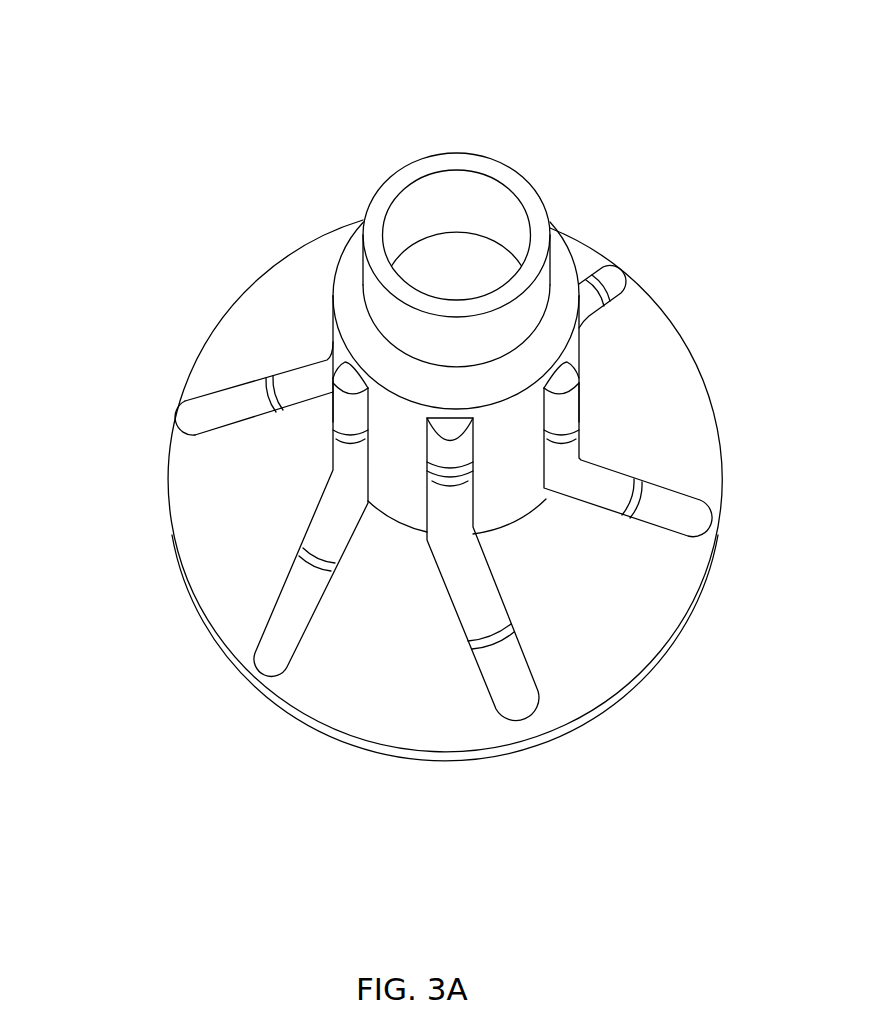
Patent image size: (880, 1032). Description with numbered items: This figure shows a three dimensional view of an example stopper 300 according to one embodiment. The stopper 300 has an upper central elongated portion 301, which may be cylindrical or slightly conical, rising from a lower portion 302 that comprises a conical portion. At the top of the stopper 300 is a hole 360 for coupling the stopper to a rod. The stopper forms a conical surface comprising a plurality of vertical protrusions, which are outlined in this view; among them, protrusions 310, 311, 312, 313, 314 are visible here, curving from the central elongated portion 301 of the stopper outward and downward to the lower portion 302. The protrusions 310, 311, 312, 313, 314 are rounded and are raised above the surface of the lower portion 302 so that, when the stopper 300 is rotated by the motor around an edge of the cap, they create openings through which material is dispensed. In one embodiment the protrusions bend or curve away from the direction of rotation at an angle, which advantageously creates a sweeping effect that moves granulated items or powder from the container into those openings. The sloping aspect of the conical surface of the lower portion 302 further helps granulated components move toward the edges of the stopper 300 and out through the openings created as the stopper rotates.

The stopper 300 is at (168, 61).
The central elongated portion 301 is at (418, 460).
The lower portion 302 is at (291, 334).
The protrusion 310 is at (622, 297).
The protrusion 311 is at (655, 530).
The protrusion 312 is at (467, 621).
The protrusion 313 is at (283, 586).
The protrusion 314 is at (280, 420).
The hole 360 is at (476, 268).